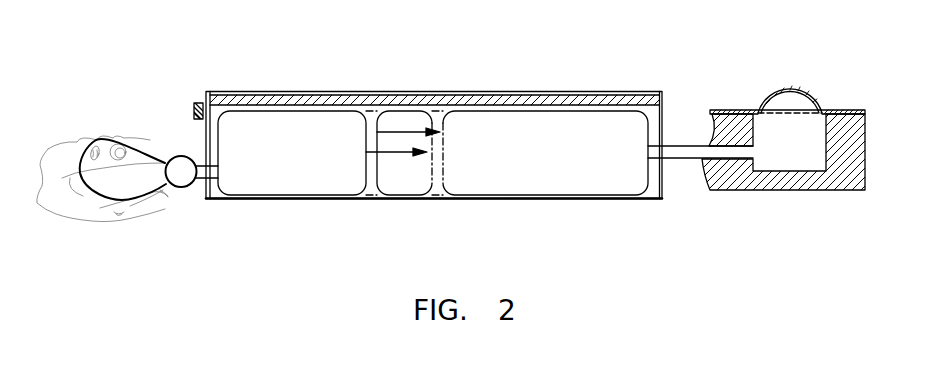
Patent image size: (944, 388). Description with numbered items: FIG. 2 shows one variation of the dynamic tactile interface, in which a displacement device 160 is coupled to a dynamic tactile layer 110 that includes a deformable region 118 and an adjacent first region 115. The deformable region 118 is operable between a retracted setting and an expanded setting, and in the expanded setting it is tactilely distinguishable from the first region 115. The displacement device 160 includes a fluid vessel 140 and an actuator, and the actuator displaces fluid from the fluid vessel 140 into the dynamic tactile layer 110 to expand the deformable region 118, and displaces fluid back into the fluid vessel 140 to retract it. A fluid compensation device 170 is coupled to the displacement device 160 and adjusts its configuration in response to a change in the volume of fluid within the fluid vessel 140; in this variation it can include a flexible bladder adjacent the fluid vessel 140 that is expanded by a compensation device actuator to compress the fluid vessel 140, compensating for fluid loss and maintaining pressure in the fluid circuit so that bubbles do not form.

The dynamic tactile layer 110 is at (716, 108).
The first region 115 is at (749, 110).
The deformable region 118 is at (797, 92).
The fluid vessel 140 is at (552, 174).
The displacement device 160 is at (658, 103).
The fluid compensation device 170 is at (274, 174).